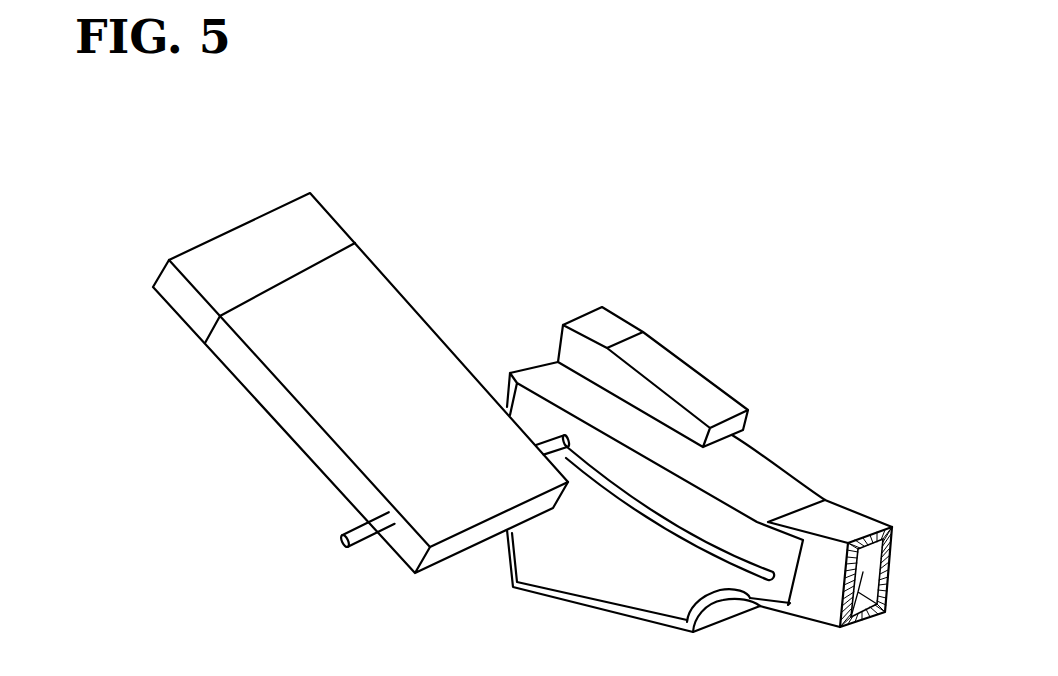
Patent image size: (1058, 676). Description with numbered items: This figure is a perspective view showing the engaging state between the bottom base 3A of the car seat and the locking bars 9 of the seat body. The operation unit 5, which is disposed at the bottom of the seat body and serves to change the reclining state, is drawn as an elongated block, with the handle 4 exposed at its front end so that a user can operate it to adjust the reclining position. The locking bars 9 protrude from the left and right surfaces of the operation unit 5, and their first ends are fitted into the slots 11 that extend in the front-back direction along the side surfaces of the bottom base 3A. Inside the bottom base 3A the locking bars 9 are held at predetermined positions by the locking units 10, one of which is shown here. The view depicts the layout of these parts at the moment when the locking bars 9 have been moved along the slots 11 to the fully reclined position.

The bottom base 3A is at (778, 431).
The handle 4 is at (178, 298).
The operation unit 5 is at (295, 422).
The locking bar 9 is at (370, 547).
The locking unit 10 is at (621, 590).
The slot 11 is at (645, 508).